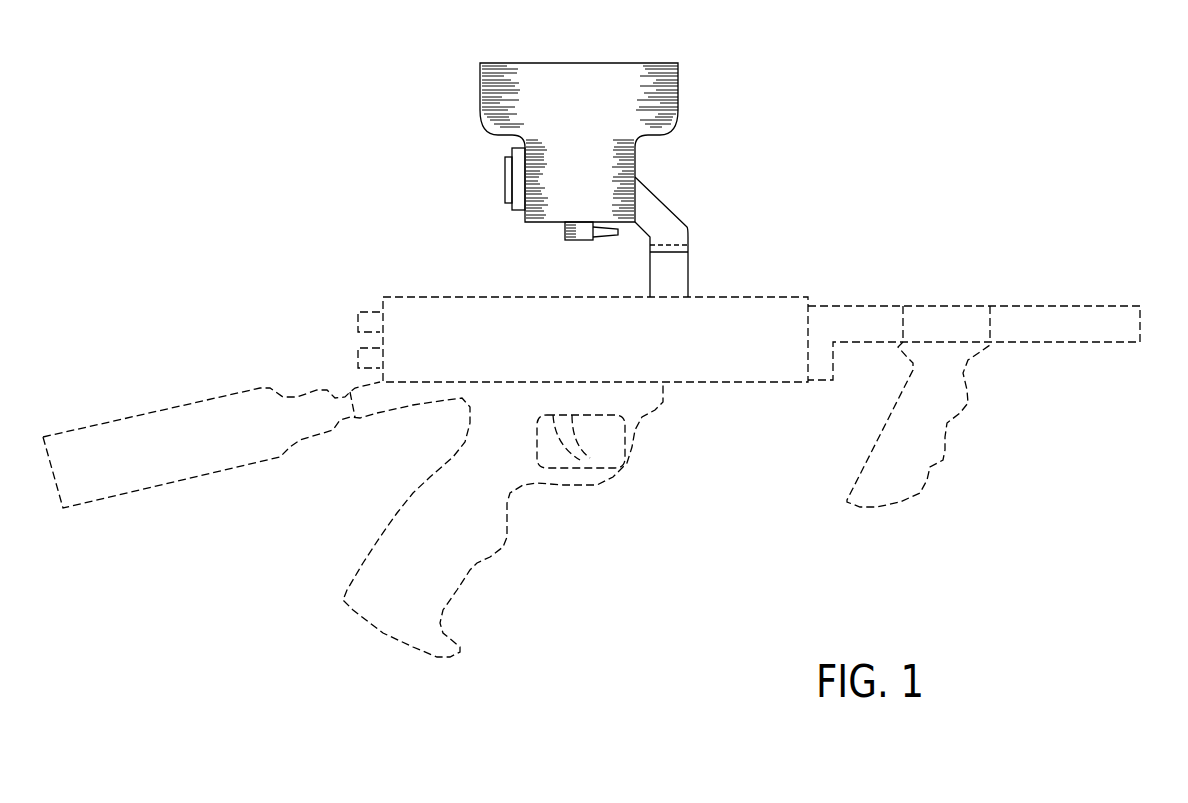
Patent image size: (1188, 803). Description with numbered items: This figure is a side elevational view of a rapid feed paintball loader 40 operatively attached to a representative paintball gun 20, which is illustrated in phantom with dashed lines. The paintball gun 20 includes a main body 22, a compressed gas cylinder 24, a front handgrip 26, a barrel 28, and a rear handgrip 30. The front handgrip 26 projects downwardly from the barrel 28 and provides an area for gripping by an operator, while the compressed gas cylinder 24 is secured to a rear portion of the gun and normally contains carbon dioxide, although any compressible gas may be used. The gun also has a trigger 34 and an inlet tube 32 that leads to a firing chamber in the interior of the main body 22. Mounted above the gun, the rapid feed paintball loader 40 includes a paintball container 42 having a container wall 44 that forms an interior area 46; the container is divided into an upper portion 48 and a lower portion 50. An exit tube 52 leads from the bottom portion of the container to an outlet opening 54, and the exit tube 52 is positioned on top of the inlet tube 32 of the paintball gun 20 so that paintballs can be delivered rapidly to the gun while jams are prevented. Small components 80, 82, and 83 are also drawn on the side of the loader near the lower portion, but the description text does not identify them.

The paintball gun 20 is at (363, 297).
The main body 22 is at (522, 296).
The compressed gas cylinder 24 is at (150, 467).
The front handgrip 26 is at (915, 463).
The barrel 28 is at (1053, 325).
The rear handgrip 30 is at (445, 563).
The inlet tube 32 is at (658, 278).
The trigger 34 is at (575, 448).
The rapid feed paintball loader 40 is at (588, 150).
The paintball container 42 is at (523, 100).
The container wall 44 is at (481, 80).
The interior area 46 is at (576, 86).
The upper portion 48 is at (678, 98).
The lower portion 50 is at (638, 155).
The exit tube 52 is at (673, 227).
The outlet opening 54 is at (667, 252).
The switch 80 is at (520, 207).
The connector 82 is at (603, 234).
The switch cap 83 is at (508, 172).